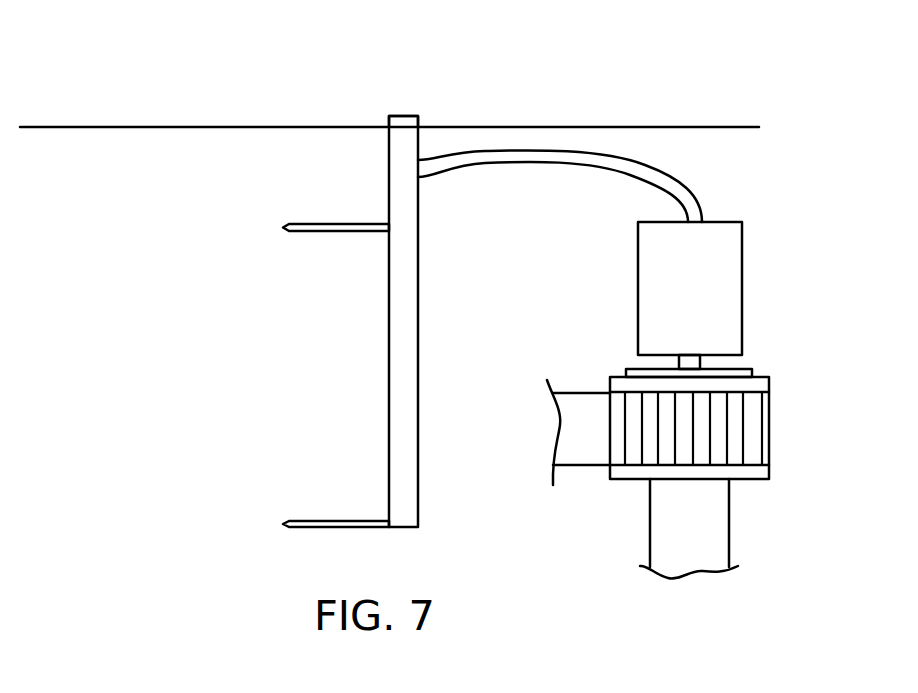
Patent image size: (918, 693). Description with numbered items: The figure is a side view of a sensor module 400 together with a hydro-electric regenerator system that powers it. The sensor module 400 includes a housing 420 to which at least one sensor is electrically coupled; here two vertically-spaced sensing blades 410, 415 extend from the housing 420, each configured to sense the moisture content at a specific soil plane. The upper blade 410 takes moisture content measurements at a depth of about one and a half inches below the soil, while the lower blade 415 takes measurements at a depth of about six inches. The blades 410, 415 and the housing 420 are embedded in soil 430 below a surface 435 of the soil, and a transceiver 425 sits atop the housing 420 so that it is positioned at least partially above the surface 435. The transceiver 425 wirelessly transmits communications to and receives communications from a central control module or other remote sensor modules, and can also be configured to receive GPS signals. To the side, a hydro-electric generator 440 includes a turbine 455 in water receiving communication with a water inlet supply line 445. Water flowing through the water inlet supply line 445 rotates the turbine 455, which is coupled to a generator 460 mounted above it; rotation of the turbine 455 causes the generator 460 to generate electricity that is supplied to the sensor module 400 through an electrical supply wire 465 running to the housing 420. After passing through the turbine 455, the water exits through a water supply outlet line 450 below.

The sensor module 400 is at (212, 311).
The sensor blade 410 is at (353, 223).
The sensor blade 415 is at (352, 520).
The housing 420 is at (419, 393).
The transceiver 425 is at (401, 115).
The soil 430 is at (605, 246).
The surface 435 is at (222, 126).
The hydro-electric generator 440 is at (770, 292).
The water inlet supply line 445 is at (603, 391).
The water supply outlet line 450 is at (649, 509).
The turbine 455 is at (770, 384).
The generator 460 is at (715, 220).
The electrical supply wire 465 is at (582, 150).